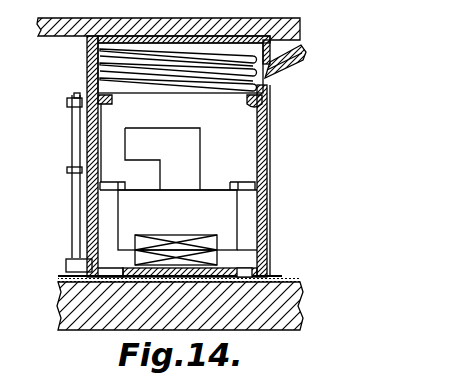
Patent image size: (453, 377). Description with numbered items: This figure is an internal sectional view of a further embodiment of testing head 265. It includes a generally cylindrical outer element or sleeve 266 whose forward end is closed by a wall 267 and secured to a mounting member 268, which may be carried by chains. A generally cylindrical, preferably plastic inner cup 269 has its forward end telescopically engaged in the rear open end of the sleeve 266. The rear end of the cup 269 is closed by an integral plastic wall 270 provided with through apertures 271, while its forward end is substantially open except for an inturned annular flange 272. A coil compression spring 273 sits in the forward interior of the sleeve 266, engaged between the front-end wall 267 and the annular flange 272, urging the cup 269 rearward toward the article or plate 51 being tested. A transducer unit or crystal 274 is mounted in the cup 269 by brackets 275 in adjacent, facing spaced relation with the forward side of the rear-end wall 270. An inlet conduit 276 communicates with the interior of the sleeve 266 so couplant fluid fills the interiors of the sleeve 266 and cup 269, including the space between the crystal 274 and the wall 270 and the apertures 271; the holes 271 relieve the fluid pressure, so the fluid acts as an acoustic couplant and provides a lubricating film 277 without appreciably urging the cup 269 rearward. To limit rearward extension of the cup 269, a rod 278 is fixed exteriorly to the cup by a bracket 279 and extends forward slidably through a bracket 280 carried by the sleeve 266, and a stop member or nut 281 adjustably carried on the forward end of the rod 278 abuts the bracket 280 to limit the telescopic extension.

The plate 51 is at (300, 316).
The testing head 265 is at (271, 135).
The outer element or sleeve 266 is at (86, 76).
The wall 267 is at (116, 38).
The mounting member 268 is at (302, 34).
The inner cup 269 is at (237, 208).
The rear-end wall 270 is at (223, 264).
The through apertures 271 is at (245, 268).
The inturned annular flange 272 is at (266, 107).
The coil compression spring 273 is at (228, 104).
The transducer unit or crystal 274 is at (262, 193).
The brackets 275 is at (245, 184).
The inlet conduit 276 is at (306, 66).
The lubricating film 277 is at (70, 275).
The rod 278 is at (72, 214).
The bracket 279 is at (68, 261).
The bracket 280 is at (68, 171).
The stop member or nut 281 is at (66, 104).